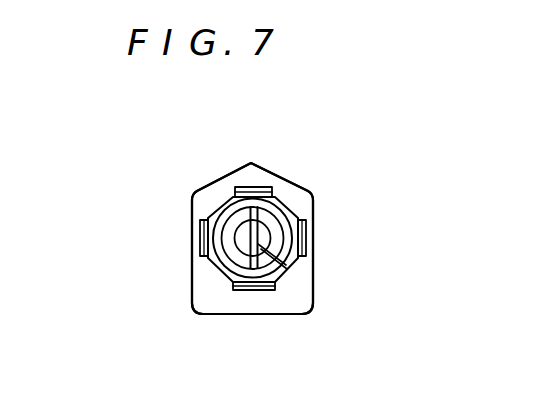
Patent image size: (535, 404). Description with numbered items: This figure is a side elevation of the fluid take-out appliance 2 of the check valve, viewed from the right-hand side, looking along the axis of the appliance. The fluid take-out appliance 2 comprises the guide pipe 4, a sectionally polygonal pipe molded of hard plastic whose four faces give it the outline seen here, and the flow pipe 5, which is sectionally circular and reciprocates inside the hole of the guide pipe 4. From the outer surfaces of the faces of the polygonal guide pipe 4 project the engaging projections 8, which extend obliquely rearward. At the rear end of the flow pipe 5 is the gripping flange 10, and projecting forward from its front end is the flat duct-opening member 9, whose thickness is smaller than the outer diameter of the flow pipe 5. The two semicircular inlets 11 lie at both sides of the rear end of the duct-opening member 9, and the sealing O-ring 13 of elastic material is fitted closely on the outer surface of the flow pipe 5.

The fluid take-out appliance 2 is at (227, 199).
The guide pipe 4 is at (218, 268).
The flow pipe 5 is at (262, 258).
The engaging projections 8 is at (307, 232).
The duct-opening member 9 is at (252, 246).
The gripping flange 10 is at (290, 184).
The semicircular inlets 11 is at (204, 219).
The sealing O-ring 13 is at (253, 207).